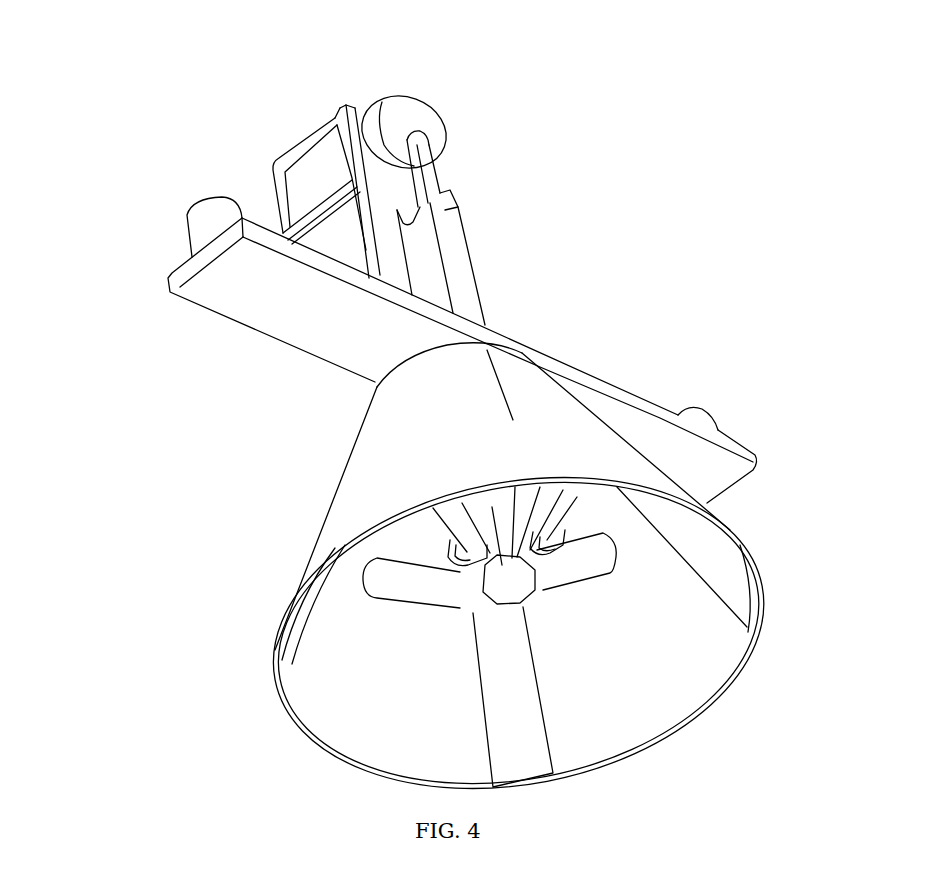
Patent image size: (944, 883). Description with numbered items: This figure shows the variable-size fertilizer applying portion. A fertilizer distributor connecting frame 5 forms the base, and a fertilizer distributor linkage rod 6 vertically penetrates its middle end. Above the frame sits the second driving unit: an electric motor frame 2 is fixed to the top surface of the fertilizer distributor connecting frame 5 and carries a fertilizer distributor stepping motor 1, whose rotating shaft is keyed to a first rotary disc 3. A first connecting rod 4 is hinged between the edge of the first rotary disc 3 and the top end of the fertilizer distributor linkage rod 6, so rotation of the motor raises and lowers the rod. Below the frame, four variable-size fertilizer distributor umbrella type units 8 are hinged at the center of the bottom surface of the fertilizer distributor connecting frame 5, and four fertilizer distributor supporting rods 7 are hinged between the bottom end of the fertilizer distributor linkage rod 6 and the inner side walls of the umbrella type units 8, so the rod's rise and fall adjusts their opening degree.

The fertilizer distributor stepping motor 1 is at (305, 155).
The electric motor frame 2 is at (325, 223).
The first rotary disc 3 is at (402, 117).
The first connecting rod 4 is at (420, 163).
The fertilizer distributor connecting frame 5 is at (198, 288).
The fertilizer distributor linkage rod 6 is at (457, 278).
The fertilizer distributor supporting rod 7 is at (580, 572).
The variable-size fertilizer distributor umbrella type unit 8 is at (543, 410).